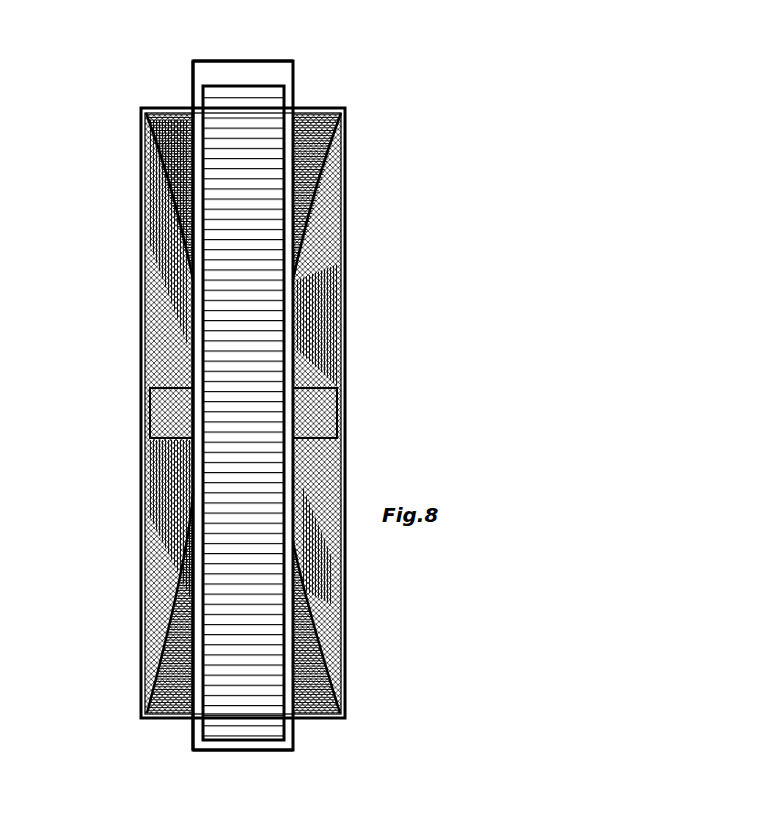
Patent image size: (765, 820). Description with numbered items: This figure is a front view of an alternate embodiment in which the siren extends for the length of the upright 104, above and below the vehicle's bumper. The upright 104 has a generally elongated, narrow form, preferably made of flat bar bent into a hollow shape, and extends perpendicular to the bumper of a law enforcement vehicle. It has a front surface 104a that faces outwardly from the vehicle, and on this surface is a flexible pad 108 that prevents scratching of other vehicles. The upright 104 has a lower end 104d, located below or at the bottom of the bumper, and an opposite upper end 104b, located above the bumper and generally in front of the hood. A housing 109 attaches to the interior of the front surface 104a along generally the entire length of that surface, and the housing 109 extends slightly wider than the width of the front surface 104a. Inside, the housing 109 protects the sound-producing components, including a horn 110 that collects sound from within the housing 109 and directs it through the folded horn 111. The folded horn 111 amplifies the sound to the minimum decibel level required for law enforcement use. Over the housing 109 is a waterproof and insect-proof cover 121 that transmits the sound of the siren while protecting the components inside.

The upright 104 is at (252, 403).
The front surface 104a is at (198, 410).
The upper end 104b is at (233, 61).
The lower end 104d is at (248, 750).
The flexible pad 108 is at (243, 413).
The housing 109 is at (345, 153).
The horn 110 is at (330, 325).
The folded horn 111 is at (327, 415).
The cover 121 is at (333, 555).